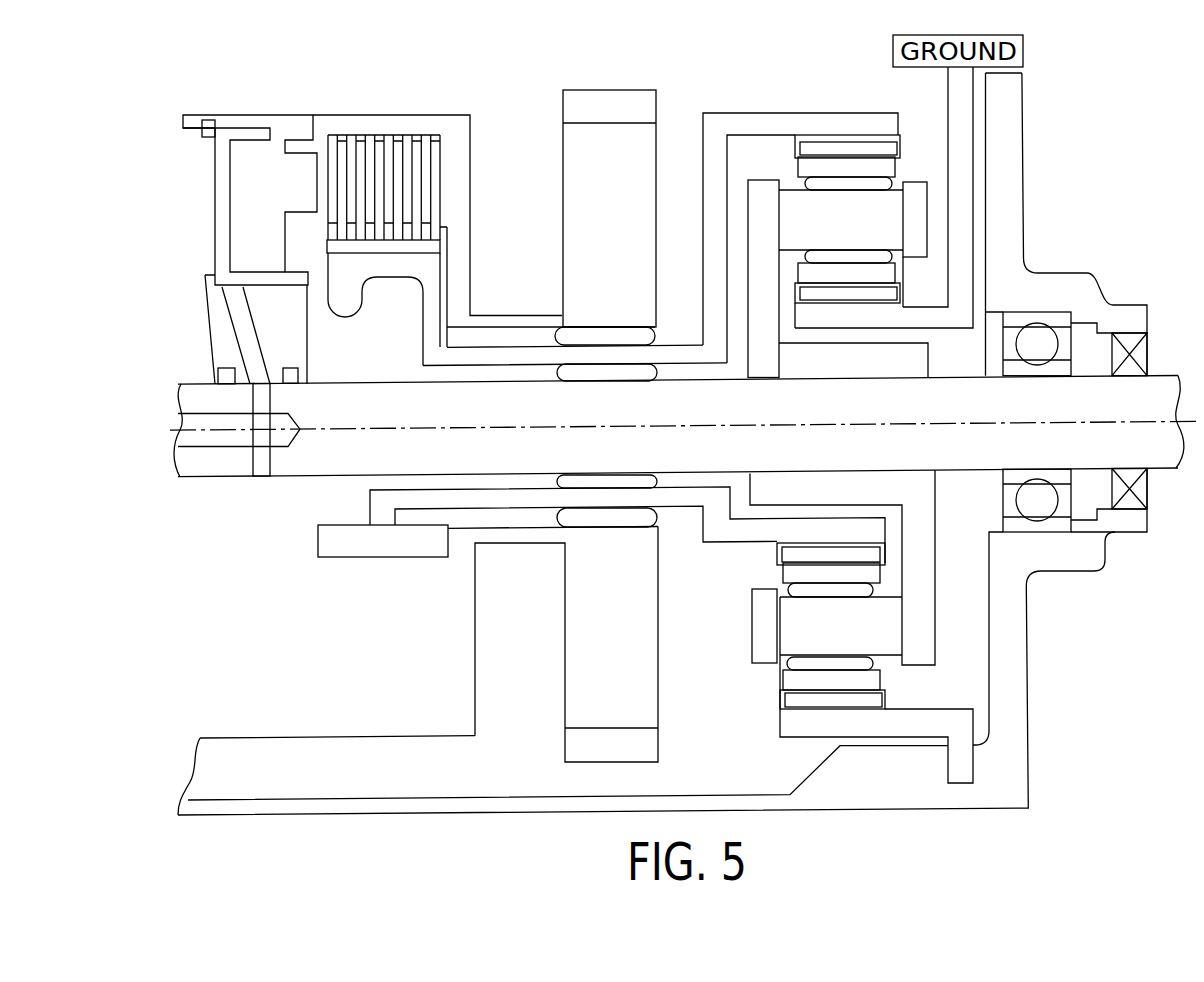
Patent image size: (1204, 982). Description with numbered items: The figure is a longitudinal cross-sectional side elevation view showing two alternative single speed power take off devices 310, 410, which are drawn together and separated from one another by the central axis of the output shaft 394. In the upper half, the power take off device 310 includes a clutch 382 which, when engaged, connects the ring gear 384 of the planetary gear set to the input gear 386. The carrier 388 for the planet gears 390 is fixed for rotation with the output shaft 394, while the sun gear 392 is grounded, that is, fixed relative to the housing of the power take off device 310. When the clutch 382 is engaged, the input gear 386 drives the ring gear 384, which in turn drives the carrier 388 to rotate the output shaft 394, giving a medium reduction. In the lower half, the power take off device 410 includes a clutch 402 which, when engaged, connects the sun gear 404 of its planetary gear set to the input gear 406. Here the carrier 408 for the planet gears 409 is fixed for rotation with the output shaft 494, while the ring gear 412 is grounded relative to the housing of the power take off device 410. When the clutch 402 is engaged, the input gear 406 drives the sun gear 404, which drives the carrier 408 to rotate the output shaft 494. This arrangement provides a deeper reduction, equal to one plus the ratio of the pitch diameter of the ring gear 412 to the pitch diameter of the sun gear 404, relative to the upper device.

The power take off device 310 is at (804, 222).
The clutch 382 is at (277, 131).
The ring gear 384 is at (713, 127).
The input gear 386 is at (617, 100).
The carrier 388 is at (763, 188).
The planet gears 390 is at (888, 167).
The sun gear 392 is at (868, 304).
The output shaft 394 is at (1152, 385).
The clutch 402 is at (317, 541).
The sun gear 404 is at (743, 531).
The input gear 406 is at (580, 745).
The carrier 408 is at (915, 532).
The planet gears 409 is at (790, 677).
The power take off device 410 is at (1033, 659).
The ring gear 412 is at (935, 724).
The output shaft 494 is at (1165, 452).